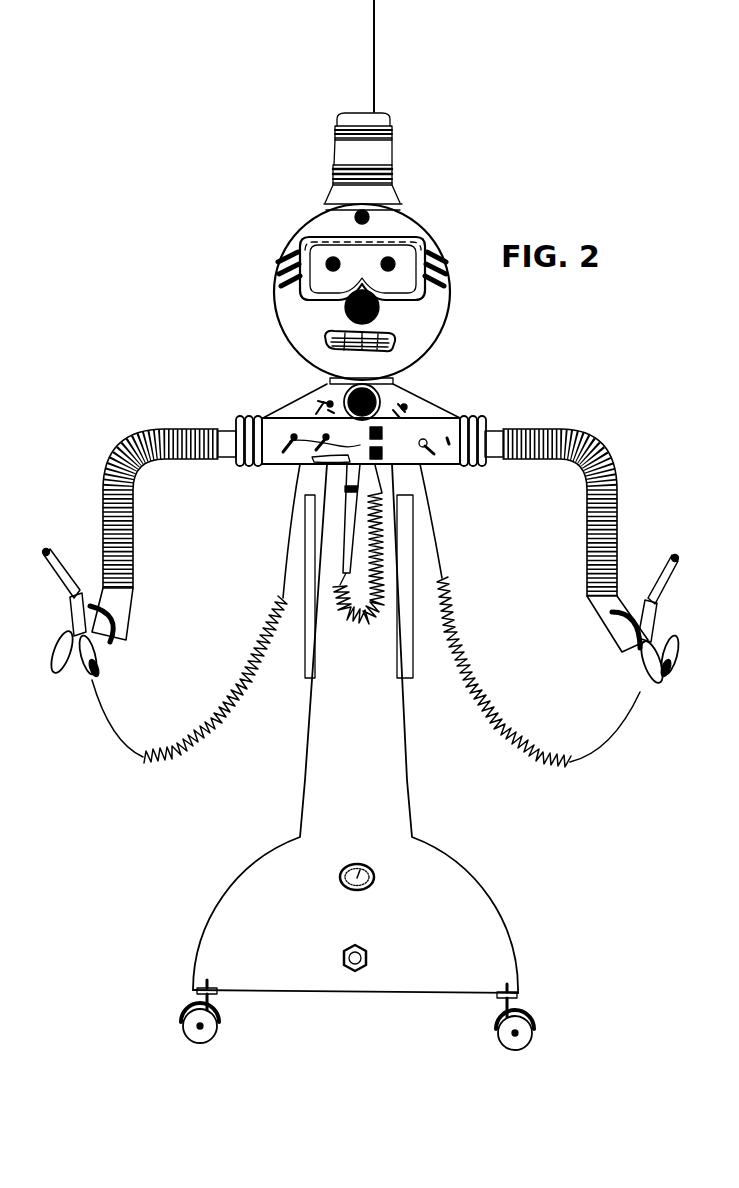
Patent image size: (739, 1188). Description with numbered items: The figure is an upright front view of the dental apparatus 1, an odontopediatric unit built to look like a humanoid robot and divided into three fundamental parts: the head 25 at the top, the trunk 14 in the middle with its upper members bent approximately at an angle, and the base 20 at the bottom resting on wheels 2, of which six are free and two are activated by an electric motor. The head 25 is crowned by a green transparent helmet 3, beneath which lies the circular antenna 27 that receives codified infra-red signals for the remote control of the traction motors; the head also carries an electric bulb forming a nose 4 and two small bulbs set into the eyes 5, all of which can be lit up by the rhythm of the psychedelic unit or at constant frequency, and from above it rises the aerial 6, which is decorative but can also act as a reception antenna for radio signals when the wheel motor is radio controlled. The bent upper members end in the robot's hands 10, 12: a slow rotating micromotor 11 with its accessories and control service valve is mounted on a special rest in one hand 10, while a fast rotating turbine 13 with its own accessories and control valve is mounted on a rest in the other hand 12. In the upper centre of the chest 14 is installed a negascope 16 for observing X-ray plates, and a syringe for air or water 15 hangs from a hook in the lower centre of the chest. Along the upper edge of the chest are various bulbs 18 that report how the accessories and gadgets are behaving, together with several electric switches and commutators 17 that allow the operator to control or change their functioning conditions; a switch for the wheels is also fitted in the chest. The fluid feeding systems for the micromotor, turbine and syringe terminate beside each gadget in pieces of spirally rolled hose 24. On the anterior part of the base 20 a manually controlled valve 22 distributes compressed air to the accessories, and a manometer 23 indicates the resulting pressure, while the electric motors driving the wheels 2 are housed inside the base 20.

The dental apparatus 1 is at (307, 398).
The wheels 2 is at (518, 1028).
The green transparent helmet 3 is at (350, 153).
The head 4 is at (340, 316).
The eyes 5 is at (392, 263).
The aerial 6 is at (375, 75).
The robot's hand 10 is at (93, 640).
The slow rotating micromotor 11 is at (83, 567).
The robot's hand 12 is at (627, 645).
The right nozzle tool 13 is at (643, 590).
The trunk 14 is at (408, 437).
The syringe for air or water 15 is at (348, 472).
The negascope 16 is at (342, 415).
The electric switches and commutators 17 is at (380, 452).
The bulbs 18 is at (385, 432).
The base 20 is at (453, 910).
The fastening nut 22 is at (354, 975).
The manometer 23 is at (345, 868).
The spirally rolled hose 24 is at (240, 697).
The head 25 is at (300, 245).
The antenna 27 is at (402, 205).